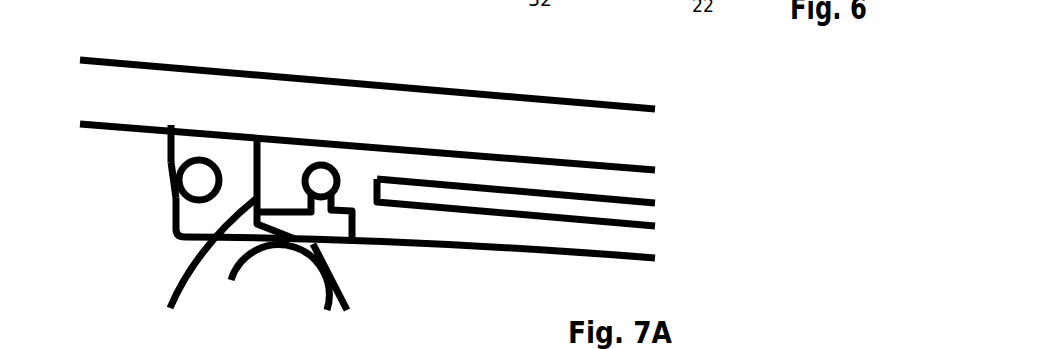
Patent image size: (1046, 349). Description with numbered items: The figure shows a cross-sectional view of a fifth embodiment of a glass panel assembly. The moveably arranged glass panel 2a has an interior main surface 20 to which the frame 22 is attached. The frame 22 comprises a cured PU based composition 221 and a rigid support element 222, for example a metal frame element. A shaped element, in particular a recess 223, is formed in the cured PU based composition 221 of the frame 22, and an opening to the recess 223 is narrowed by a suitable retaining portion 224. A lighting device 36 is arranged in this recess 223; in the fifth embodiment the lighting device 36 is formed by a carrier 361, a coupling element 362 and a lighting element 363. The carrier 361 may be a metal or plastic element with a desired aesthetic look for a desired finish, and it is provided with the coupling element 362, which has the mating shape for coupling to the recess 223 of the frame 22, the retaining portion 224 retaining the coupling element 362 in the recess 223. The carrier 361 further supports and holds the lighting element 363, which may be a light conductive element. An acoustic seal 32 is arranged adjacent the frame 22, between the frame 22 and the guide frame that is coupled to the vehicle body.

The interior main surface 20 is at (116, 145).
The frame 22 is at (460, 262).
The cured PU based composition 221 is at (368, 162).
The rigid support element 222 is at (455, 200).
The recess 223 is at (300, 152).
The retaining portion 224 is at (340, 206).
The glass panel 2a is at (560, 137).
The acoustic seal 32 is at (213, 283).
The lighting device 36 is at (184, 119).
The carrier 361 is at (200, 145).
The coupling element 362 is at (317, 178).
The lighting element 363 is at (199, 180).